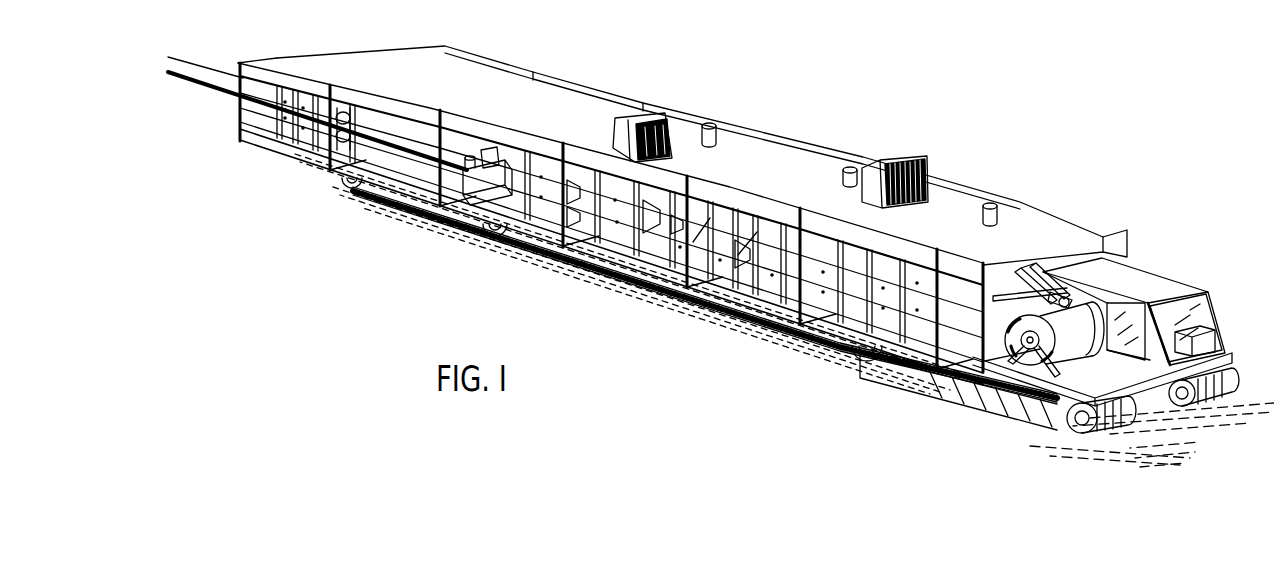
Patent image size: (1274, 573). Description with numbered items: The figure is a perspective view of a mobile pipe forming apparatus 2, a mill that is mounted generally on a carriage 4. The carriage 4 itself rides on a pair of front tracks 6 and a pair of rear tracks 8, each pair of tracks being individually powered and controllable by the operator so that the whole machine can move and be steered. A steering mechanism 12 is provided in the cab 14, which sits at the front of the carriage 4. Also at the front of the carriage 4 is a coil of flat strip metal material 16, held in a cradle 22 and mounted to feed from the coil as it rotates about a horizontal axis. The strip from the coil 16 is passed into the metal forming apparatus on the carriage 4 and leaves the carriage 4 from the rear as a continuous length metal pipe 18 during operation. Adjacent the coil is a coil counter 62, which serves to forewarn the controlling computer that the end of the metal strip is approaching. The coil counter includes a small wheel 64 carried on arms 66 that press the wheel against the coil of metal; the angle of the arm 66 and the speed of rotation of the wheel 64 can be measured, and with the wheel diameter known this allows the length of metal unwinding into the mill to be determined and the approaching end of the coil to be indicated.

The mobile pipe forming apparatus 2 is at (720, 336).
The carriage 4 is at (1053, 417).
The front tracks 6 is at (1128, 406).
The rear tracks 8 is at (356, 188).
The steering mechanism 12 is at (1192, 334).
The cab 14 is at (1163, 288).
The coil of flat strip metal material 16 is at (1037, 372).
The continuous length metal pipe 18 is at (211, 84).
The cradle 22 is at (1060, 392).
The coil counter 62 is at (1047, 272).
The small wheel 64 is at (1093, 277).
The arms 66 is at (1003, 353).